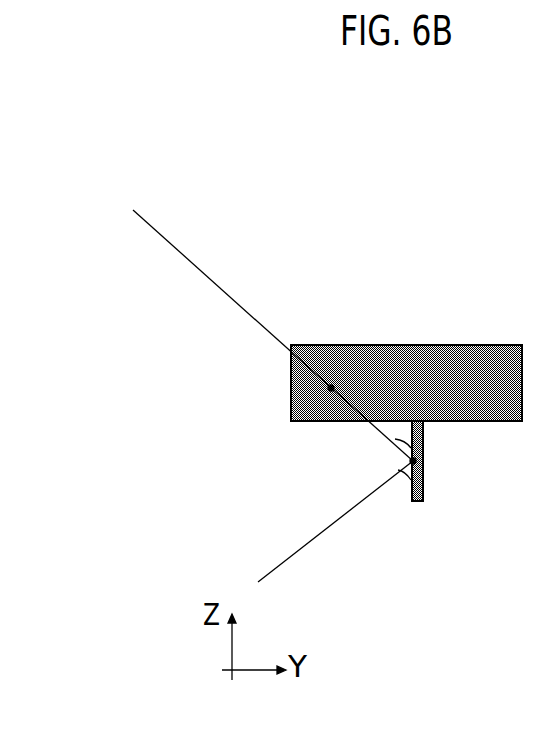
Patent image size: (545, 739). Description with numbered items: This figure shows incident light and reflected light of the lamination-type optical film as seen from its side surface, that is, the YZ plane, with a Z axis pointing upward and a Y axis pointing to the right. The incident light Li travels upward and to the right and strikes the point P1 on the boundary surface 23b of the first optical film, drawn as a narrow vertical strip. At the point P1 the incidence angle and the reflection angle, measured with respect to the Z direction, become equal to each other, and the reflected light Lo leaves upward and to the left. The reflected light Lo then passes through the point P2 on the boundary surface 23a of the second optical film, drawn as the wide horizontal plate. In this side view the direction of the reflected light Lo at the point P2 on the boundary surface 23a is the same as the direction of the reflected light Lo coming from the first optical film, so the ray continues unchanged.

The boundary surface 23a is at (450, 352).
The boundary surface 23b is at (411, 503).
The point P1 is at (423, 457).
The point P2 is at (334, 386).
The reflected light Lo is at (273, 335).
The incident light Li is at (335, 521).